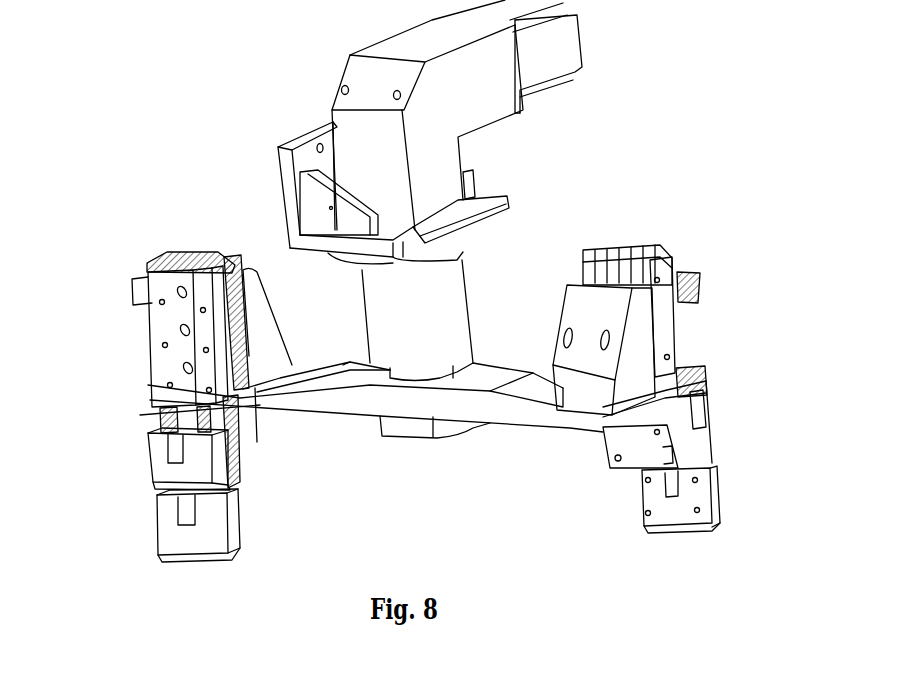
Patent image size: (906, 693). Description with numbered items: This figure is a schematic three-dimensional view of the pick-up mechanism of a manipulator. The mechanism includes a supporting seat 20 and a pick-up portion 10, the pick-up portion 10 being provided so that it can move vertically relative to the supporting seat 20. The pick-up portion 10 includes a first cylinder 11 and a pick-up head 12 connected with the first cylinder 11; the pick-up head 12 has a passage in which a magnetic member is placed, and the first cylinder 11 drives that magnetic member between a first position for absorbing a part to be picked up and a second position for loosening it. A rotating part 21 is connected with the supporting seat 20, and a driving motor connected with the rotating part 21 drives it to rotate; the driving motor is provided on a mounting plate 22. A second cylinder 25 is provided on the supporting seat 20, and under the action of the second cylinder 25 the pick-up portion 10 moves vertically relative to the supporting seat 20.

The pick-up portion 10 is at (353, 492).
The first cylinder 11 is at (216, 430).
The pick-up head 12 is at (225, 532).
The supporting seat 20 is at (633, 357).
The rotating part 21 is at (473, 402).
The mounting plate 22 is at (510, 200).
The second cylinder 25 is at (229, 412).